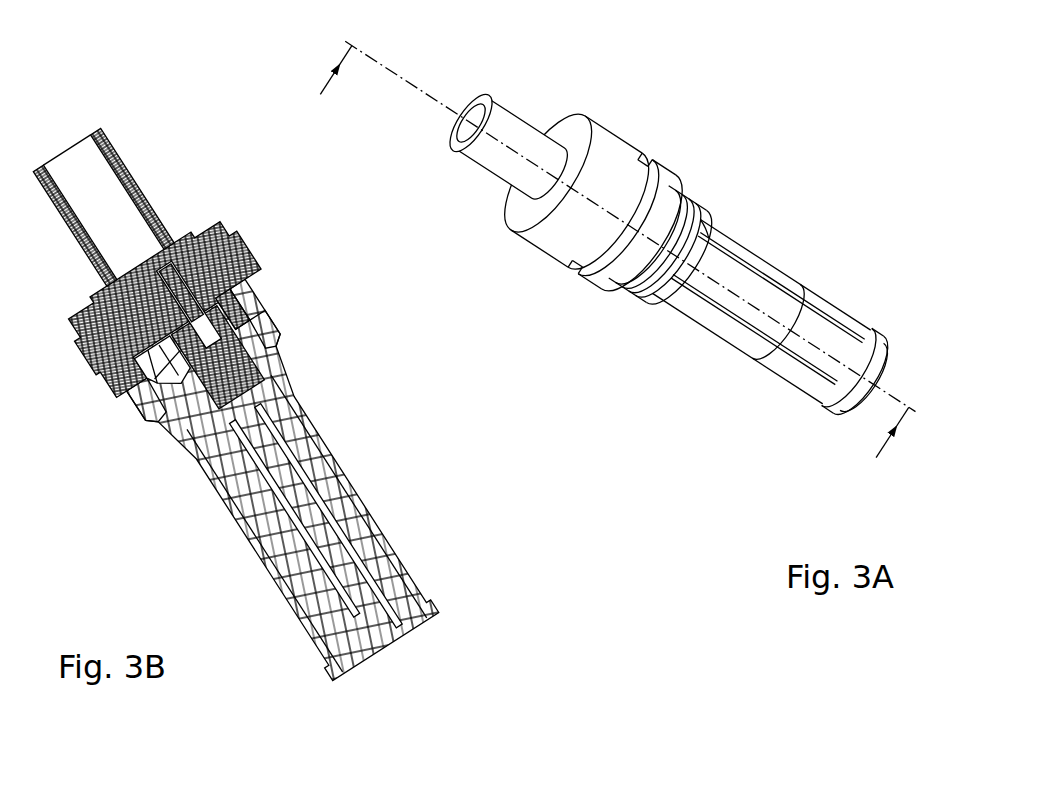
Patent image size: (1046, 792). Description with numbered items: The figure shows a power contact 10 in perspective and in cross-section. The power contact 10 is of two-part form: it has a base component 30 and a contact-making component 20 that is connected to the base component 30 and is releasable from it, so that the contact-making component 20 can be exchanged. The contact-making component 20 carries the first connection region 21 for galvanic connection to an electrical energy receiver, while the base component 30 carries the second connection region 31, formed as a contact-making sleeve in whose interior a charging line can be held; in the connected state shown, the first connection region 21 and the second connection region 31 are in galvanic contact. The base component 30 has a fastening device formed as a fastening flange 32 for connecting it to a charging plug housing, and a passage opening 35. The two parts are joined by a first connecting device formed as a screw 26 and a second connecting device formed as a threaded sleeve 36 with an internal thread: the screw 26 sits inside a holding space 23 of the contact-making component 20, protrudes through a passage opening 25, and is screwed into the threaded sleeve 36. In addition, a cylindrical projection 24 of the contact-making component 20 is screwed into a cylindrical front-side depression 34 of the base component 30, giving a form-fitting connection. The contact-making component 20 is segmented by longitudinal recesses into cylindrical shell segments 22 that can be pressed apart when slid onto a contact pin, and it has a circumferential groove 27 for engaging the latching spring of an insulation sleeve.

In FIG. 3B, the power contact 10 is at (33, 73).
In FIG. 3A, the power contact 10 is at (843, 31).
In FIG. 3B, the contact-making component 20 is at (294, 484).
In FIG. 3A, the contact-making component 20 is at (754, 323).
In FIG. 3B, the first connection region 21 is at (375, 438).
In FIG. 3A, the first connection region 21 is at (754, 323).
In FIG. 3A, the cylindrical shell segment 22 is at (717, 267).
In FIG. 3B, the holding space 23 is at (320, 518).
In FIG. 3B, the cylindrical projection 24 is at (240, 330).
In FIG. 3B, the passage opening 25 is at (178, 371).
In FIG. 3B, the screw 26 is at (207, 370).
In FIG. 3B, the groove 27 is at (280, 333).
In FIG. 3A, the groove 27 is at (670, 178).
In FIG. 3B, the base component 30 is at (171, 306).
In FIG. 3A, the base component 30 is at (560, 160).
In FIG. 3B, the second connection region 31 is at (115, 165).
In FIG. 3A, the second connection region 31 is at (490, 153).
In FIG. 3B, the fastening flange 32 is at (243, 260).
In FIG. 3B, the cylindrical front-side depression 34 is at (147, 380).
In FIG. 3B, the passage opening 35 is at (178, 359).
In FIG. 3B, the threaded sleeve 36 is at (203, 300).